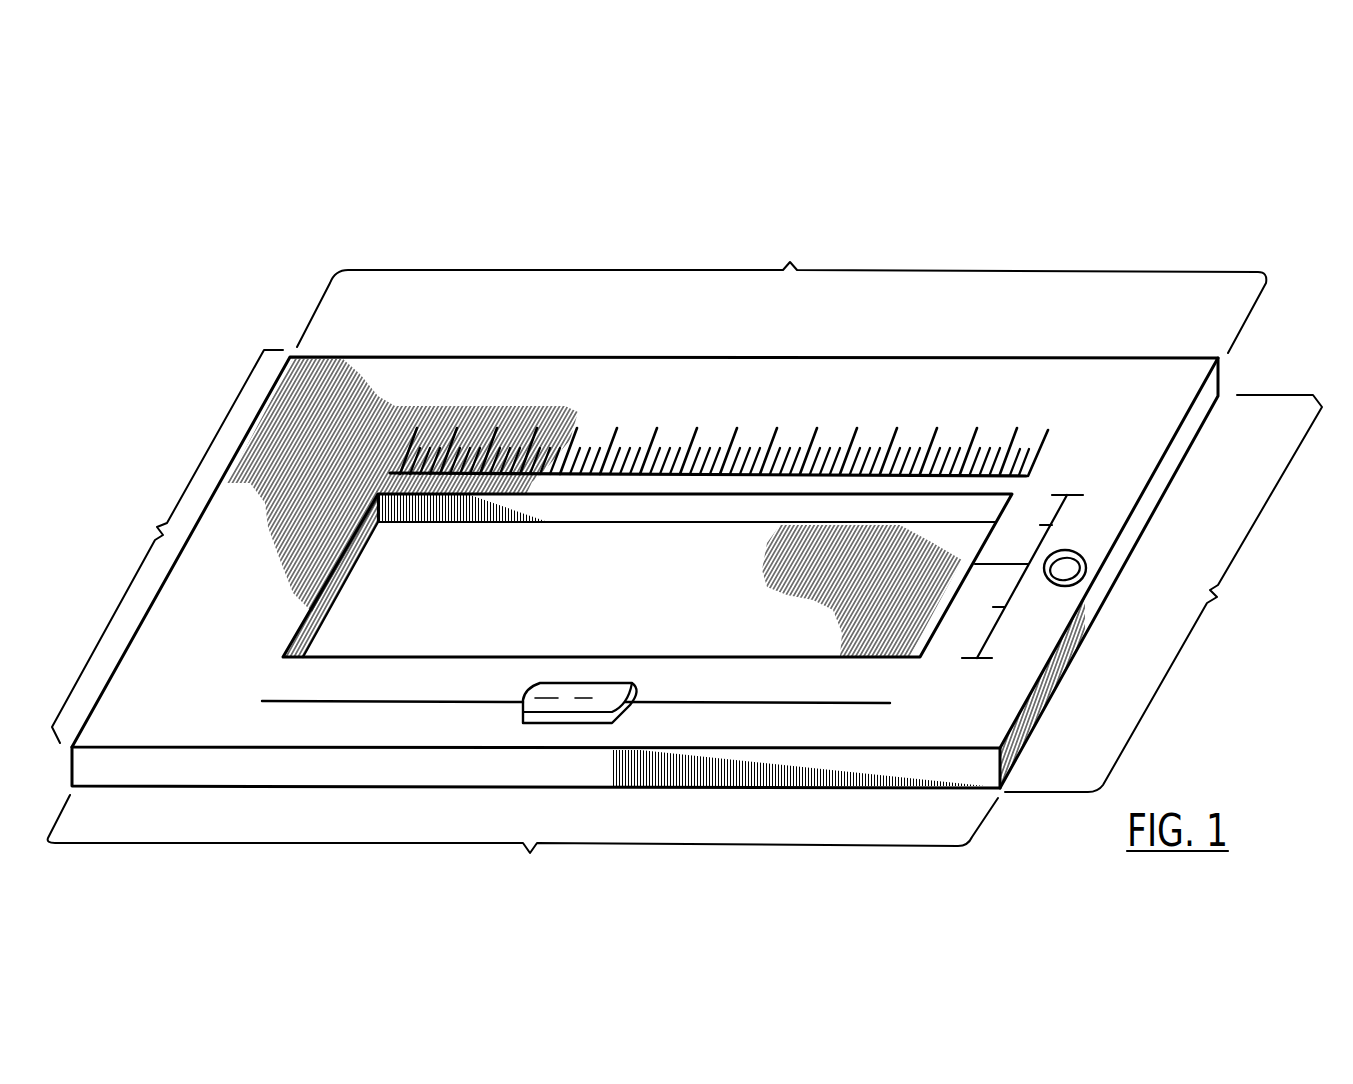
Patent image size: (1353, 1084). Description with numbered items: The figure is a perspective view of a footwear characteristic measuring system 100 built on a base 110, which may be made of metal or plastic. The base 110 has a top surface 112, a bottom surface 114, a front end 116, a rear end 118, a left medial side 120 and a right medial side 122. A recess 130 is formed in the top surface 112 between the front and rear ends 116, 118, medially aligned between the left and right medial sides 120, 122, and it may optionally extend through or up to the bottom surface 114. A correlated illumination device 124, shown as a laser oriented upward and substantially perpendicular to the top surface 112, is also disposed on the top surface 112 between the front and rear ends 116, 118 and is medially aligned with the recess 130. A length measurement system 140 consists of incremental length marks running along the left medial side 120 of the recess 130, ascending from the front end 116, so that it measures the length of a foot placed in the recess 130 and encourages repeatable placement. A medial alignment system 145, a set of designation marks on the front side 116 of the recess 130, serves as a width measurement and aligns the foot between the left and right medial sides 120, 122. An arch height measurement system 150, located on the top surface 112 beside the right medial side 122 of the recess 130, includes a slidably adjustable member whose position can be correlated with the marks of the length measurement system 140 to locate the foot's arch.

The footwear characteristic measuring system 100 is at (700, 528).
The base 110 is at (685, 559).
The top surface 112 is at (1087, 390).
The bottom surface 114 is at (1182, 475).
The front end 116 is at (1163, 593).
The rear end 118 is at (167, 546).
The left medial side 120 is at (781, 292).
The right medial side 122 is at (523, 841).
The correlated illumination device 124 is at (1074, 569).
The recess 130 is at (656, 599).
The length measurement system 140 is at (714, 416).
The medial alignment system 145 is at (1027, 597).
The arch height measurement system 150 is at (567, 738).